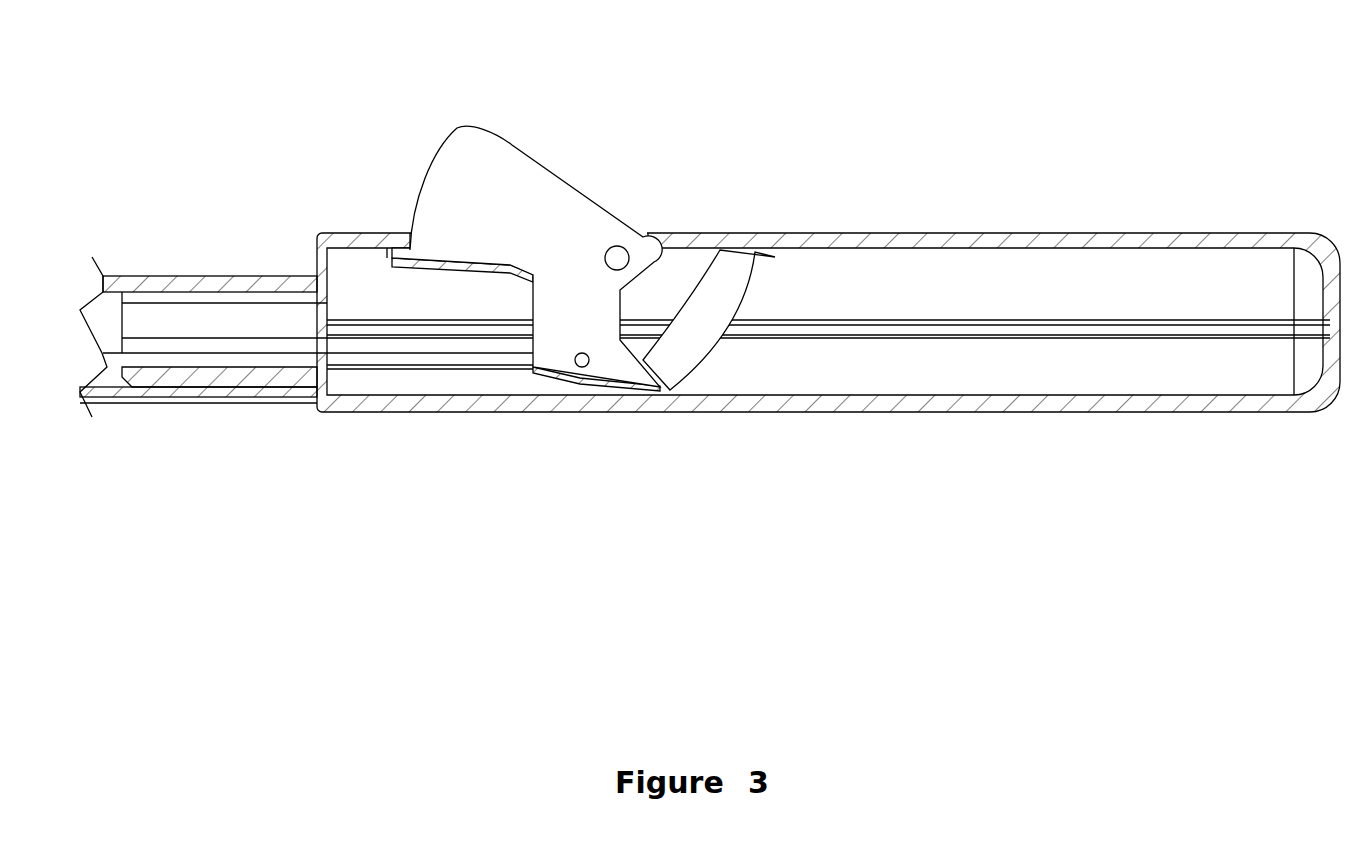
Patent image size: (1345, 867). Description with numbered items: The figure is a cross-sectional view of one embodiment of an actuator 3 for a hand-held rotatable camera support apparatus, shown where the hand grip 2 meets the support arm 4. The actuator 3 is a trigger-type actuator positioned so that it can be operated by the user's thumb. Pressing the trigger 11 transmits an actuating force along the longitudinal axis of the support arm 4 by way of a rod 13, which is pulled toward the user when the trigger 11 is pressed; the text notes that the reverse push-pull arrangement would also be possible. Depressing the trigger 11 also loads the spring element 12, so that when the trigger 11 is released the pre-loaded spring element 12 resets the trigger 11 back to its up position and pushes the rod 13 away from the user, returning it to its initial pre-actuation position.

The hand grip 2 is at (948, 237).
The actuator 3 is at (712, 41).
The support arm 4 is at (282, 408).
The trigger 11 is at (568, 174).
The spring element 12 is at (717, 357).
The rod 13 is at (480, 372).